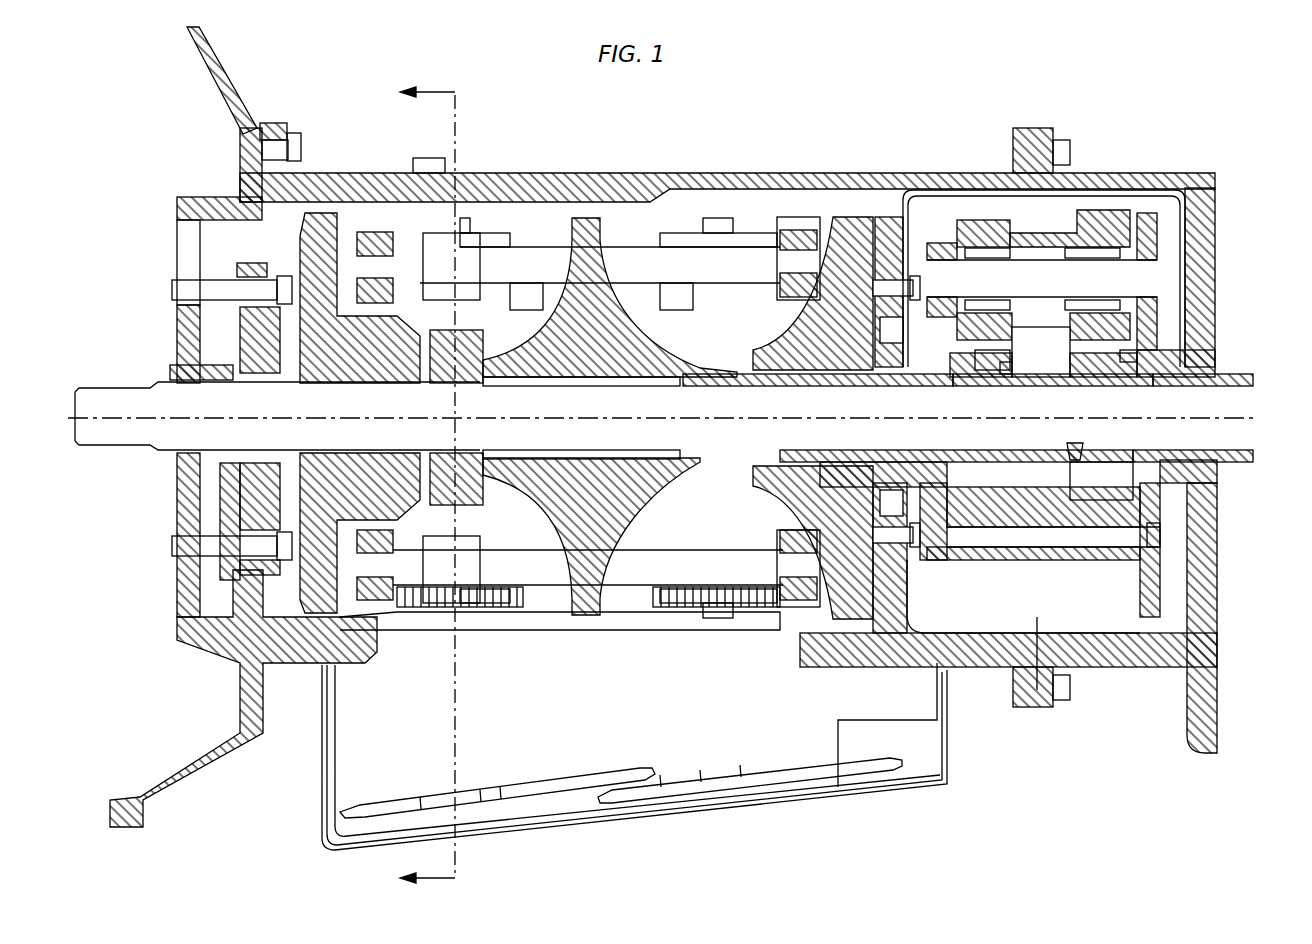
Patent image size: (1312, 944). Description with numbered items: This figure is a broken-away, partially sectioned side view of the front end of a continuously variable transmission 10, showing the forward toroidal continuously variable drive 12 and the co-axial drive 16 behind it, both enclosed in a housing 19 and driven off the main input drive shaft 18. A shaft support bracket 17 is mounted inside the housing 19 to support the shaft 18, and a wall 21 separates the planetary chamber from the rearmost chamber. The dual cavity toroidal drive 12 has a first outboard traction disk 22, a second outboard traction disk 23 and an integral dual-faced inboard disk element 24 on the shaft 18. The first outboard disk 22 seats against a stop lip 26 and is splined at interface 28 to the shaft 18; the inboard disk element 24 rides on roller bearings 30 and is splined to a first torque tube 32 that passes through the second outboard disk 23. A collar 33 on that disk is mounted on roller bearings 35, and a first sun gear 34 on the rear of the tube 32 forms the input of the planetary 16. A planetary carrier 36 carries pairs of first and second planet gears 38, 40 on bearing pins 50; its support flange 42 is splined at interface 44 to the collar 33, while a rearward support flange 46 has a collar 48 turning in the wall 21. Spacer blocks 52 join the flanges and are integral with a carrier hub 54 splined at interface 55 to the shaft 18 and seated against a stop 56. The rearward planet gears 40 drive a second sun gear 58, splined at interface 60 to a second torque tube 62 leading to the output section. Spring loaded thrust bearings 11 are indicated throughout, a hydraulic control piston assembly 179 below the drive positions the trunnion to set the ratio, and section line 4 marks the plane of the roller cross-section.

The section line 4- 4 is at (439, 485).
The continuously variable transmission 10 is at (785, 90).
The thrust bearing 11 is at (1125, 355).
The continuously variable drive 12 is at (634, 143).
The co-axial drive 16 is at (1040, 195).
The shaft support bracket 17 is at (458, 283).
The input drive shaft 18 is at (150, 385).
The housing 19 is at (330, 172).
The wall 21 is at (1205, 265).
The first outboard traction disk 22 is at (315, 290).
The second outboard traction disk 23 is at (797, 352).
The inboard traction disk element 24 is at (625, 347).
The stop lip 26 is at (300, 455).
The spline interface 28 is at (395, 385).
The roller bearings 30 is at (522, 387).
The first torque tube 32 is at (838, 386).
The collar 33 is at (928, 460).
The first sun gear 34 is at (992, 364).
The roller bearings 35 is at (882, 345).
The first planetary carrier 36 is at (1162, 232).
The first planet gear 38 is at (975, 217).
The second planet gear 40 is at (1100, 200).
The support flange 42 is at (866, 325).
The spline interface 44 is at (903, 346).
The support flange 46 is at (1142, 325).
The collar 48 is at (1205, 347).
The bearing pin 50 is at (1000, 268).
The spacer block 52 is at (1065, 560).
The carrier hub 54 is at (1050, 348).
The spline interface 55 is at (1035, 455).
The stop 56 is at (1060, 375).
The second sun gear 58 is at (1150, 387).
The spline interface 60 is at (1130, 412).
The second torque tube 62 is at (1242, 387).
The hydraulic control piston assembly 179 is at (325, 735).